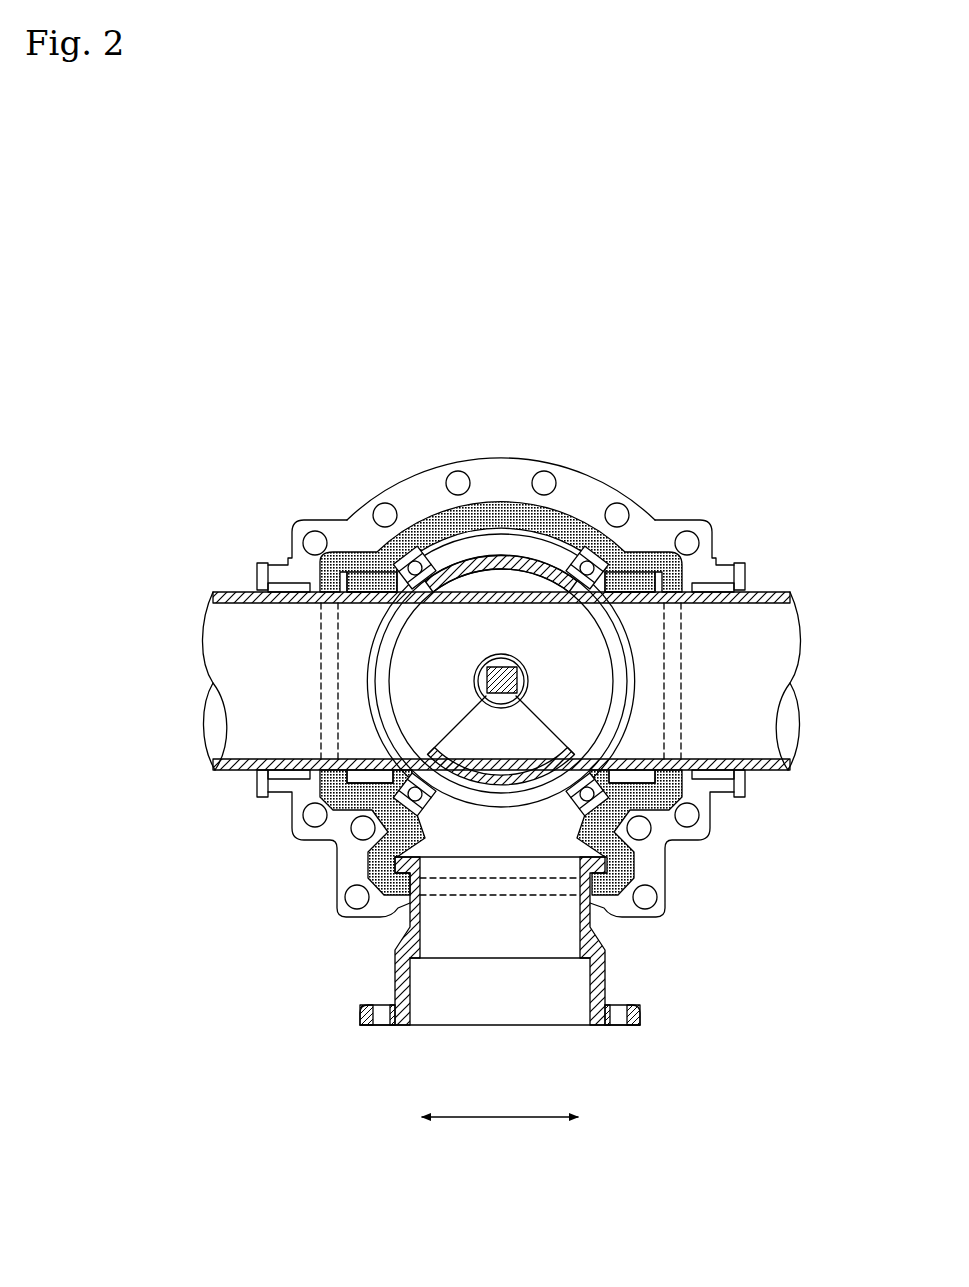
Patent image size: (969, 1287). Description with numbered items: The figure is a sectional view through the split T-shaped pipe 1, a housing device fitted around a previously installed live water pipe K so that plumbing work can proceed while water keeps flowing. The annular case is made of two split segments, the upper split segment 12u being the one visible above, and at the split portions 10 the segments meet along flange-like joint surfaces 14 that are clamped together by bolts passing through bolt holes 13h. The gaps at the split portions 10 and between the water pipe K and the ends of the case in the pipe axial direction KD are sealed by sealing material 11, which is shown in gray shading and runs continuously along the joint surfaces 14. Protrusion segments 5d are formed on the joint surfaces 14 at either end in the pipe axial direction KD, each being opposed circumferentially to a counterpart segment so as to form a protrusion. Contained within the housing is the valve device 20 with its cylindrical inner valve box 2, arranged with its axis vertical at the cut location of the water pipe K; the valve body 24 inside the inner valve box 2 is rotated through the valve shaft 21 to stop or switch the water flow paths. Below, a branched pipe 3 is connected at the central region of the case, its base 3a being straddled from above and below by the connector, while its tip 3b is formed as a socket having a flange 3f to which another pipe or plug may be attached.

The split T-shaped pipe 1 is at (266, 470).
The inner valve box 2 is at (500, 552).
The branched pipe 3 is at (395, 962).
The base 3a is at (490, 840).
The tip 3b is at (528, 1028).
The flange 3f is at (650, 1012).
The protrusion segment 5d is at (256, 580).
The split portion 10 is at (333, 508).
The sealing material 11 is at (592, 516).
The upper split segment 12u is at (410, 478).
The bolt hole 13h is at (548, 468).
The joint surface 14 is at (655, 530).
The valve device 20 is at (366, 684).
The valve shaft 21 is at (508, 656).
The valve body 24 is at (462, 770).
The water pipe K is at (215, 602).
The pipe axial direction KD is at (500, 1134).